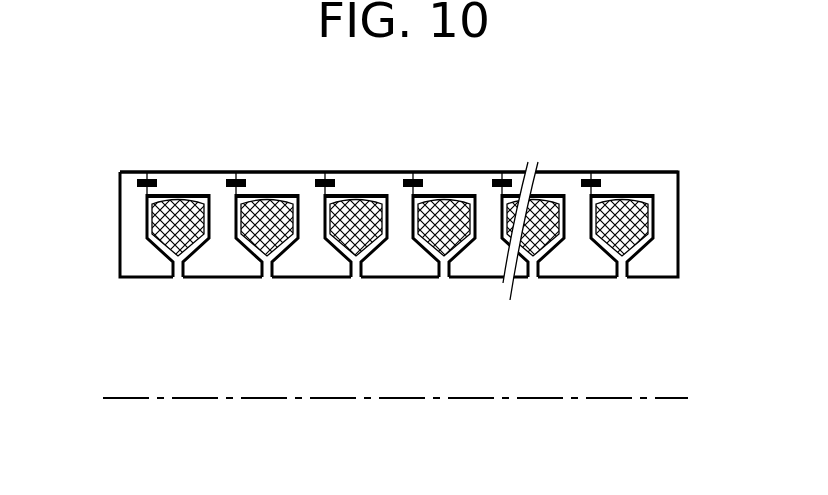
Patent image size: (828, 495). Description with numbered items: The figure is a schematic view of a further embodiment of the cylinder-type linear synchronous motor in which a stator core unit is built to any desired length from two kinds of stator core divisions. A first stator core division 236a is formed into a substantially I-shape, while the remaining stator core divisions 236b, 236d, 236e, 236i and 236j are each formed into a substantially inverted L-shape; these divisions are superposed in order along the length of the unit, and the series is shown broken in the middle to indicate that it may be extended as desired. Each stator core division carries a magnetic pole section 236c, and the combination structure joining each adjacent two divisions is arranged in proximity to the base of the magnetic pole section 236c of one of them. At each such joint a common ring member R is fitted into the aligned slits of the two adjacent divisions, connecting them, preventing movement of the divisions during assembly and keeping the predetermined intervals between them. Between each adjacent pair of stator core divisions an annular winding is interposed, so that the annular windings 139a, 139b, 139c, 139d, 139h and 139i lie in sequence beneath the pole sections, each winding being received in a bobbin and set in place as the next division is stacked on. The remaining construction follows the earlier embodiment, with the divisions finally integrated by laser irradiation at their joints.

The stator core division 236a is at (123, 185).
The stator core division 236b is at (175, 180).
The magnetic pole section 236c is at (270, 180).
The stator core division 236d is at (355, 180).
The stator core division 236e is at (452, 180).
The stator core division 236i is at (552, 180).
The stator core division 236j is at (632, 180).
The annular winding 139a is at (153, 245).
The annular winding 139b is at (243, 245).
The annular winding 139c is at (333, 245).
The annular winding 139d is at (425, 245).
The annular winding 139h is at (527, 248).
The annular winding 139i is at (612, 250).
The ring member R is at (369, 164).